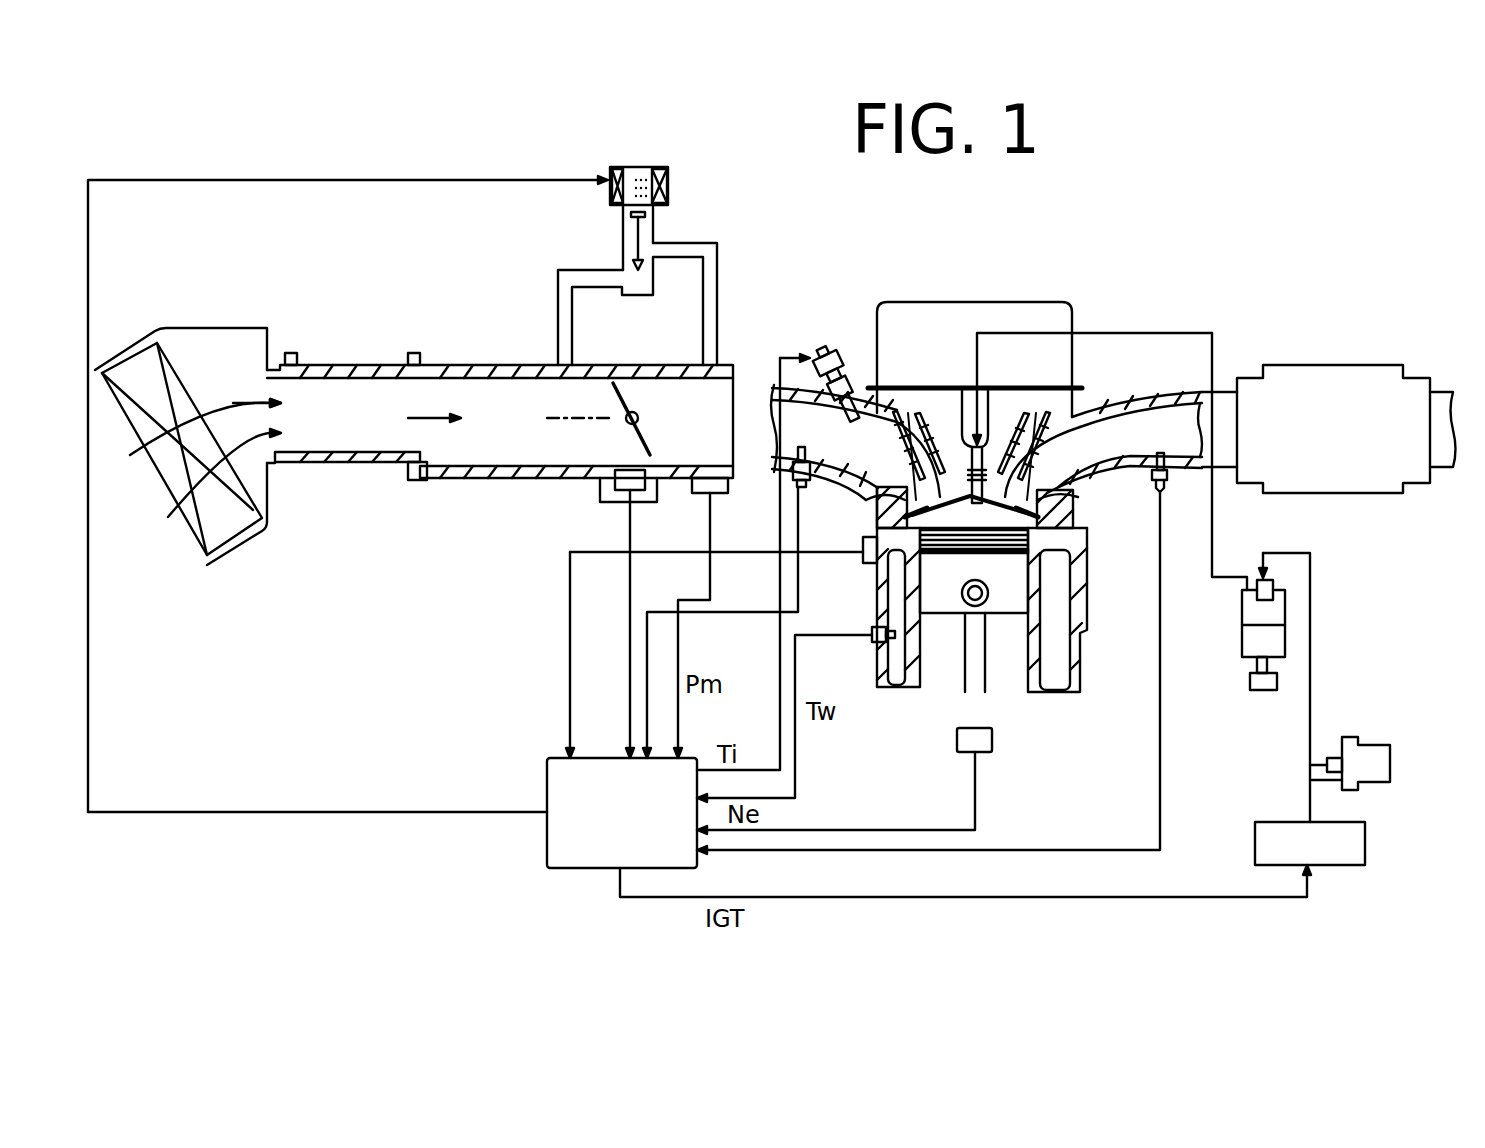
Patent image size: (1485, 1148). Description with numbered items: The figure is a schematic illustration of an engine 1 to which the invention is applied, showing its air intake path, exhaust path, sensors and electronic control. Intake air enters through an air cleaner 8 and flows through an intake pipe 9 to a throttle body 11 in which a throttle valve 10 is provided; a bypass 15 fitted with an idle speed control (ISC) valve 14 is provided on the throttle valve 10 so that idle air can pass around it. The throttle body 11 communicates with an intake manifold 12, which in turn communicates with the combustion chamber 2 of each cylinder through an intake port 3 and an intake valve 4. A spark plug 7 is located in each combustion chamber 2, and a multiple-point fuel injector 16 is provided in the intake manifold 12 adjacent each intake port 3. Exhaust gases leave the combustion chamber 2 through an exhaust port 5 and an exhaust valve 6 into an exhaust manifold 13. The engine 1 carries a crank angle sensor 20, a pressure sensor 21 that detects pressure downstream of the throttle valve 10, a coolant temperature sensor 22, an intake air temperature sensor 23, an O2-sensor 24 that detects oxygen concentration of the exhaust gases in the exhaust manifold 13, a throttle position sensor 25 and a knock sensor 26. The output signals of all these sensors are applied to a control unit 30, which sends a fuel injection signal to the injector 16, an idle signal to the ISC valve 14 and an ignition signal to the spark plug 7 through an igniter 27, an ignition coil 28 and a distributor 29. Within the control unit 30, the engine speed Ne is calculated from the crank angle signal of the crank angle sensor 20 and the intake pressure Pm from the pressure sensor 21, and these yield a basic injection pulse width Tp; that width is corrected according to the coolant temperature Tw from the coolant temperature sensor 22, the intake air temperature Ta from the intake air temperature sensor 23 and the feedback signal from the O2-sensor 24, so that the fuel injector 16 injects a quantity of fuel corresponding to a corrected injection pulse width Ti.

The engine 1 is at (1090, 552).
The combustion chamber 2 is at (1040, 488).
The intake port 3 is at (905, 492).
The intake valve 4 is at (922, 490).
The exhaust port 5 is at (1073, 492).
The exhaust valve 6 is at (1017, 490).
The spark plug 7 is at (965, 445).
The air cleaner 8 is at (251, 540).
The intake pipe 9 is at (358, 462).
The throttle valve 10 is at (617, 400).
The throttle body 11 is at (678, 478).
The intake manifold 12 is at (840, 472).
The exhaust manifold 13 is at (1130, 370).
The idle speed control valve 14 is at (655, 222).
The bypass 15 is at (717, 245).
The multiple-point fuel injector 16 is at (833, 355).
The crank angle sensor 20 is at (993, 740).
The pressure sensor 21 is at (722, 495).
The coolant temperature sensor 22 is at (873, 627).
The intake air temperature sensor 23 is at (806, 490).
The O2-sensor 24 is at (1170, 480).
The throttle position sensor 25 is at (622, 482).
The knock sensor 26 is at (860, 558).
The igniter 27 is at (1366, 842).
The ignition coil 28 is at (1380, 742).
The distributor 29 is at (1240, 633).
The control unit 30 is at (619, 831).